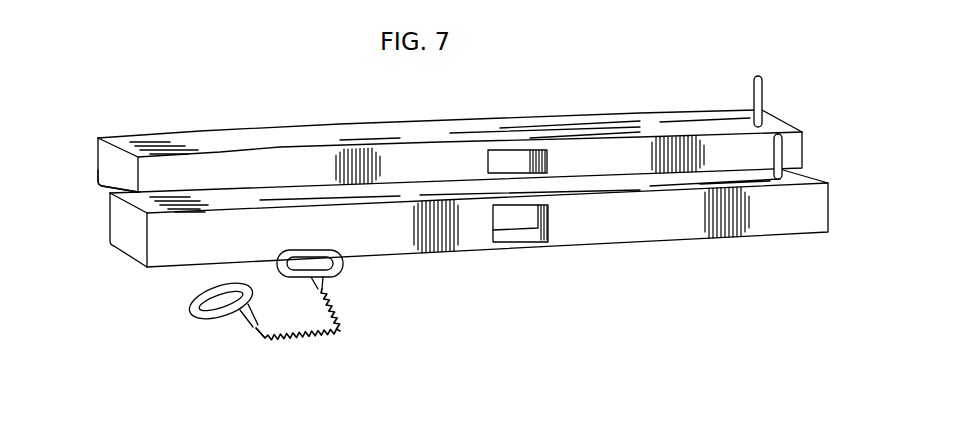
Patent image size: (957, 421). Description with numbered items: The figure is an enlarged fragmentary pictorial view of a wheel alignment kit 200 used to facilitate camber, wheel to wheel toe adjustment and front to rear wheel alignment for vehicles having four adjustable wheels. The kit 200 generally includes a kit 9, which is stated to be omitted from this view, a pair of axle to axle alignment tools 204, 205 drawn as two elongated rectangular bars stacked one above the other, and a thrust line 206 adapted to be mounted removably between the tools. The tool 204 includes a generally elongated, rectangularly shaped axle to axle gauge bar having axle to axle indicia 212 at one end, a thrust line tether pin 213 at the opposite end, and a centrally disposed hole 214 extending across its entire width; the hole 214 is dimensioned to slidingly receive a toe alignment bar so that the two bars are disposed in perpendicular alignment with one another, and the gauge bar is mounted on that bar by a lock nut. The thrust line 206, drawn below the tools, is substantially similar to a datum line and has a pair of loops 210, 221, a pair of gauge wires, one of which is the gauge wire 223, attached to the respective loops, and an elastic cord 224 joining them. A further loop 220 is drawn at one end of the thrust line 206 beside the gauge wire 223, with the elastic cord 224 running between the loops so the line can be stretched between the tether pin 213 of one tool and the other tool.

The wheel alignment kit 200 is at (463, 204).
The axle to axle alignment tool 204 is at (468, 251).
The axle to axle alignment tool 205 is at (463, 134).
The loop 210 is at (729, 239).
The axle to axle indicia 212 is at (136, 192).
The thrust line tether pin 213 is at (787, 151).
The hole 214 is at (540, 226).
The kit 9 is at (562, 262).
The thrust line 206 is at (286, 330).
The first loop 220 is at (204, 324).
The loop 221 is at (341, 267).
The gauge wire 223 is at (297, 317).
The elastic cord 224 is at (333, 340).